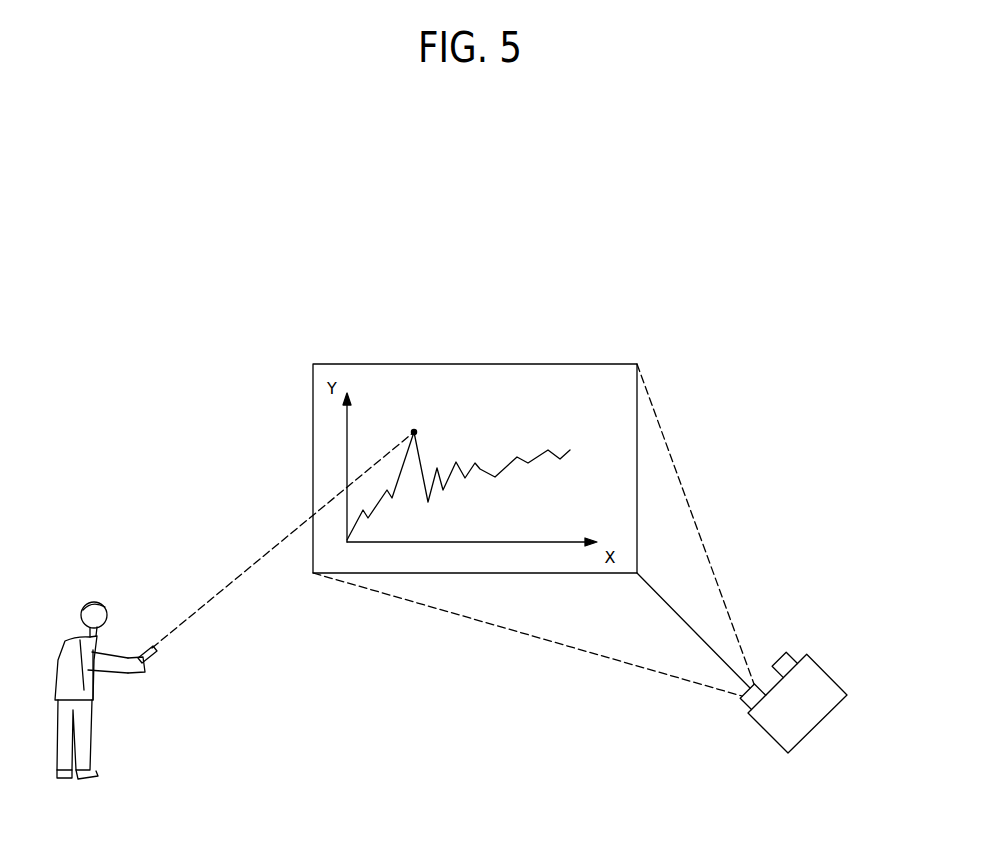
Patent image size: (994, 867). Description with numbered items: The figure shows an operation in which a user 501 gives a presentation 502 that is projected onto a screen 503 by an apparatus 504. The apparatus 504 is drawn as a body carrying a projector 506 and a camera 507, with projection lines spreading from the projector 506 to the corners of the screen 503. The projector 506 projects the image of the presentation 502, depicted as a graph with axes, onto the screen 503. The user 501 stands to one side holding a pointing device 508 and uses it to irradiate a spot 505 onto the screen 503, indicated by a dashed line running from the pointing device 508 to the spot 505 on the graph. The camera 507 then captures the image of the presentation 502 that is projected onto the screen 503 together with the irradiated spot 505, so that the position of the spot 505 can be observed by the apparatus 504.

The user 501 is at (87, 602).
The presentation 502 is at (592, 388).
The screen 503 is at (503, 364).
The apparatus 504 is at (817, 720).
The spot 505 is at (414, 432).
The projector 506 is at (748, 708).
The camera 507 is at (787, 650).
The pointing device 508 is at (152, 660).